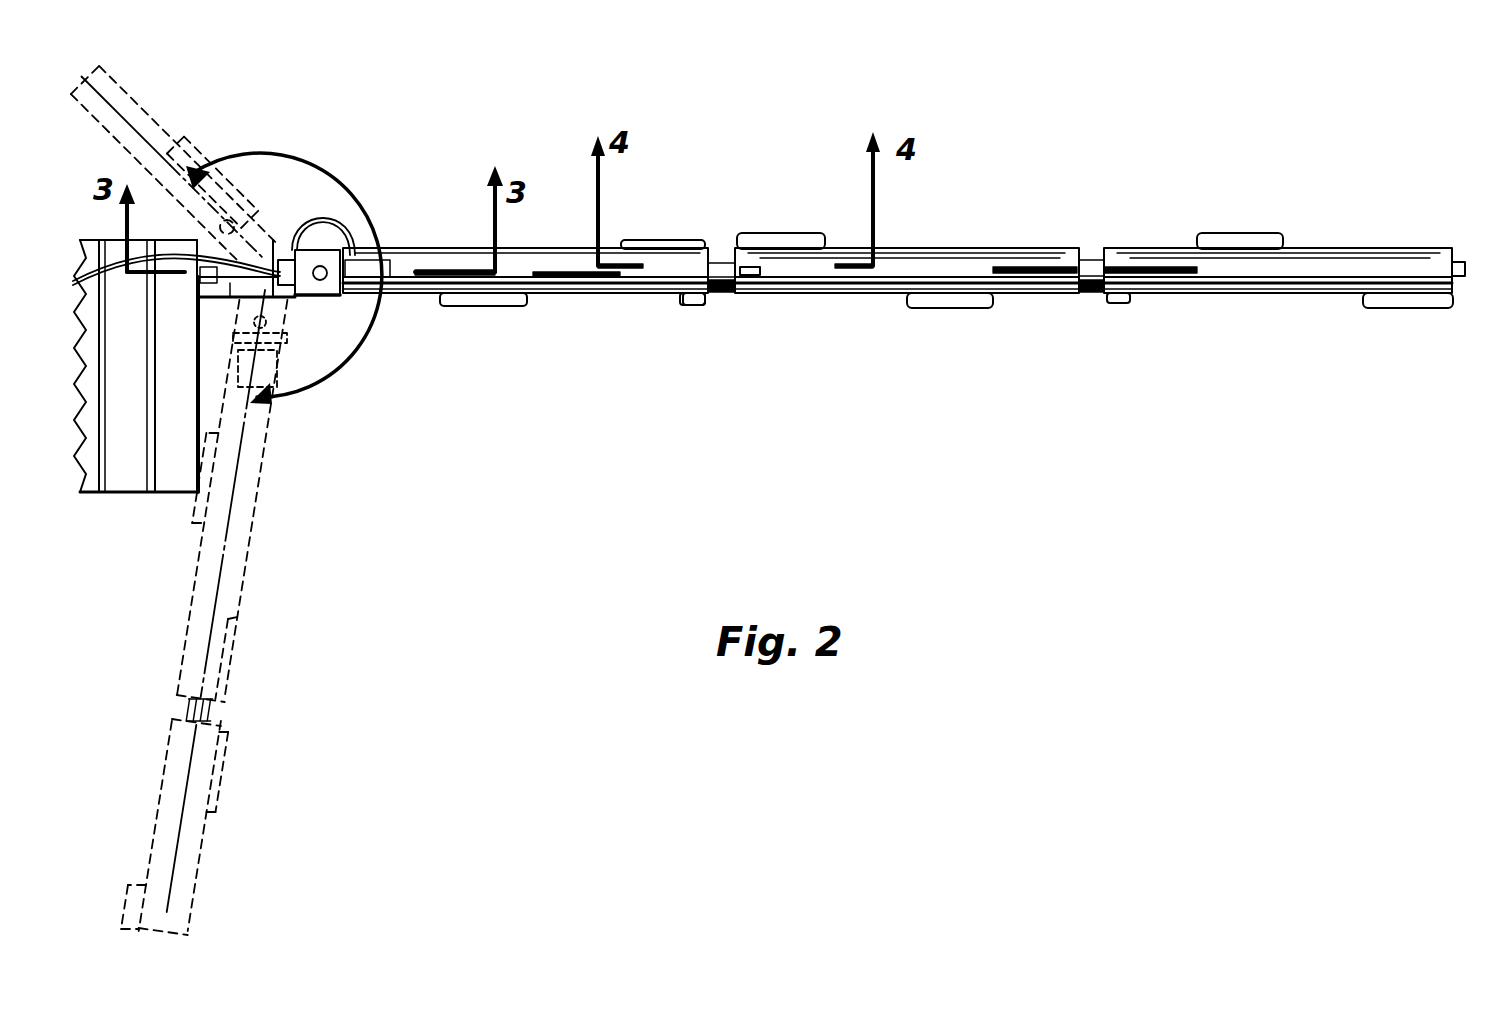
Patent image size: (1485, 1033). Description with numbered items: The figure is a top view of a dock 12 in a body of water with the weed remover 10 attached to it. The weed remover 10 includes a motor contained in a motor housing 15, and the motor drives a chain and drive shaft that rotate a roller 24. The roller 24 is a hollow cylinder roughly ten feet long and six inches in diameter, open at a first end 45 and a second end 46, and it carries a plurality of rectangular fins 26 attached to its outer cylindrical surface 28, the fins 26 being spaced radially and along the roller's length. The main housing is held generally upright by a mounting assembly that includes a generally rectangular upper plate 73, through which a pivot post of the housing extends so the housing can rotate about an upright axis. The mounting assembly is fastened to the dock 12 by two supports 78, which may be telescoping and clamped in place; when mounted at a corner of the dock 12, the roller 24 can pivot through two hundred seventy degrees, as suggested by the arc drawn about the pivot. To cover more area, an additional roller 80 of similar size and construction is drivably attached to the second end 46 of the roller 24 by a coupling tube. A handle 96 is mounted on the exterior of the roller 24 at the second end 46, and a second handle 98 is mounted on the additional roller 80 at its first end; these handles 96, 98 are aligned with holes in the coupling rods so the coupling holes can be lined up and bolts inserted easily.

The weed remover 10 is at (336, 442).
The dock 12 is at (163, 495).
The motor housing 15 is at (367, 340).
The roller 24 is at (427, 246).
The rectangular fins 26 is at (650, 240).
The outer cylindrical surface 28 is at (508, 247).
The first end 45 is at (352, 235).
The second end 46 is at (712, 285).
The upper plate 73 is at (307, 252).
The supports 78 is at (217, 292).
The additional roller 80 is at (950, 247).
The handle 96 is at (690, 306).
The second handle 98 is at (753, 272).